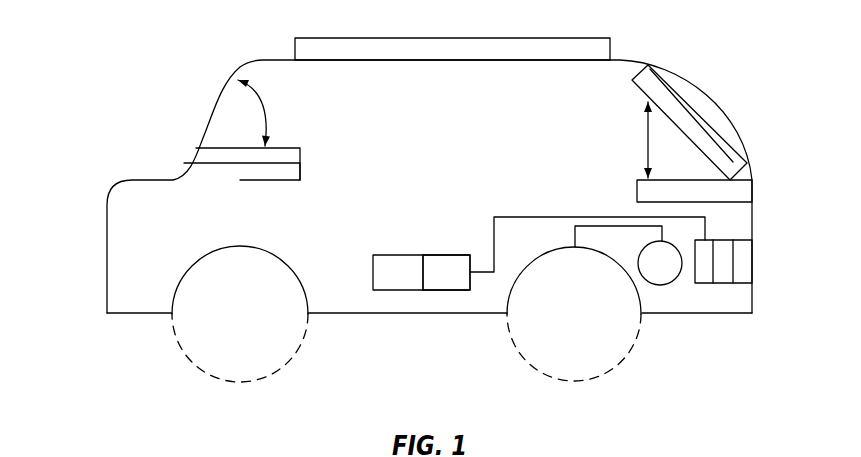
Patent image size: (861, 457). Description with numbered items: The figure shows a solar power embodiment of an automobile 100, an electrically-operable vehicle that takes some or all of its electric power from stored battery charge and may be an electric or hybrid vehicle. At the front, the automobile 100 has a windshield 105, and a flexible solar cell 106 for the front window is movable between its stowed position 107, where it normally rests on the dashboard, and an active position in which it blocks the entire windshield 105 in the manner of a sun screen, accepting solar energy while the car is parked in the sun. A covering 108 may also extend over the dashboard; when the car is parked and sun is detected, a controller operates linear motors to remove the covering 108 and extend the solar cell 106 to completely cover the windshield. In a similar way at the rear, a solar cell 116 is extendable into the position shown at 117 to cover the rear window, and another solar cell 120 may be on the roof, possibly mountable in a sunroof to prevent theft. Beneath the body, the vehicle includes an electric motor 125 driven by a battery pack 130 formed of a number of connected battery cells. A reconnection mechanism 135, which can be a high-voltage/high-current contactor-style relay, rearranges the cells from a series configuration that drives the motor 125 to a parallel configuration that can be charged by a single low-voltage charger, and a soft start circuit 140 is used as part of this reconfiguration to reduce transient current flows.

The automobile 100 is at (430, 193).
The windshield 105 is at (215, 100).
The solar cell 106 is at (300, 170).
The stowed position 107 is at (180, 229).
The covering 108 is at (300, 157).
The solar cell 116 is at (743, 192).
The extended position 117 is at (705, 135).
The solar cell 120 is at (318, 38).
The electric motor 125 is at (661, 286).
The battery pack 130 is at (743, 265).
The reconnection mechanism 135 is at (448, 290).
The soft start circuit 140 is at (400, 255).